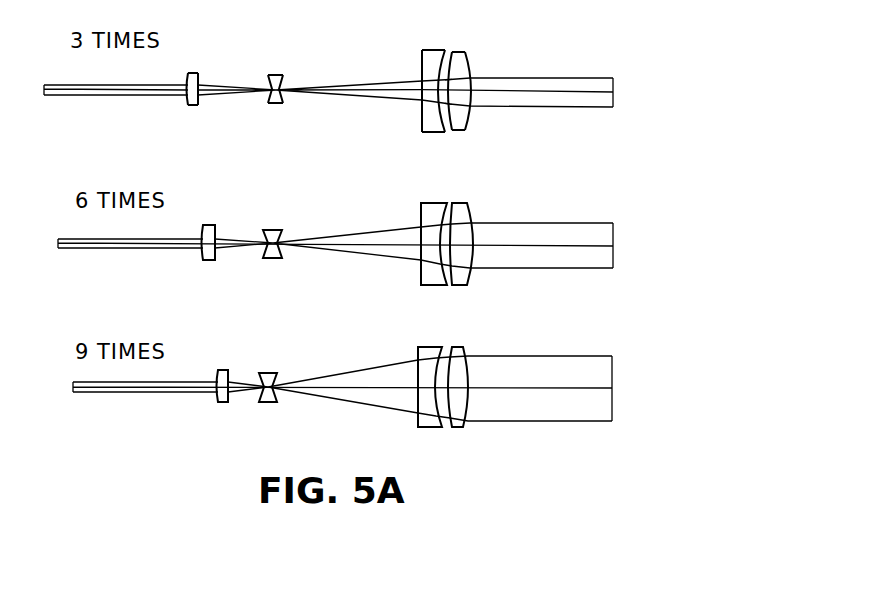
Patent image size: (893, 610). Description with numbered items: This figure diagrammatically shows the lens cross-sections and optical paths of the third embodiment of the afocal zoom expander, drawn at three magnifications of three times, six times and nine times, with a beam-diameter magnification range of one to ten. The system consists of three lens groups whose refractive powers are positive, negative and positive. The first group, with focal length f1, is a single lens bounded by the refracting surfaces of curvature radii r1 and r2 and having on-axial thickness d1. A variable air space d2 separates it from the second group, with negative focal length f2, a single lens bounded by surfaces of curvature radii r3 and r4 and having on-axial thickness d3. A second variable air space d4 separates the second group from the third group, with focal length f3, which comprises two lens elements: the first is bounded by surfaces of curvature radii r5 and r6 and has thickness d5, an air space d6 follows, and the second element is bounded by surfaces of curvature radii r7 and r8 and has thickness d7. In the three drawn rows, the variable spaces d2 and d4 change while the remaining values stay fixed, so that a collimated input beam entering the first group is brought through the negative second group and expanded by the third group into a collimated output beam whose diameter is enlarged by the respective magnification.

The focal length of first lens group f1 is at (190, 81).
The focal length of second lens group f2 is at (283, 78).
The focal length of third lens group f3 is at (470, 43).
The on-axial thickness of first lens d1 is at (189, 81).
The variable air space between first and second groups d2 is at (237, 81).
The on-axial thickness of second lens d3 is at (284, 81).
The variable air space between second and third groups d4 is at (349, 83).
The on-axial thickness of first lens of third group d5 is at (427, 84).
The air space within third group d6 is at (447, 83).
The on-axial thickness of second lens of third group d7 is at (463, 90).
The curvature radius of first refracting surface r1 is at (187, 106).
The curvature radius of second refracting surface r2 is at (199, 106).
The curvature radius of third refracting surface r3 is at (270, 101).
The curvature radius of fourth refracting surface r4 is at (288, 101).
The curvature radius of fifth refracting surface r5 is at (421, 120).
The curvature radius of sixth refracting surface r6 is at (446, 128).
The curvature radius of seventh refracting surface r7 is at (453, 128).
The curvature radius of eighth refracting surface r8 is at (473, 118).